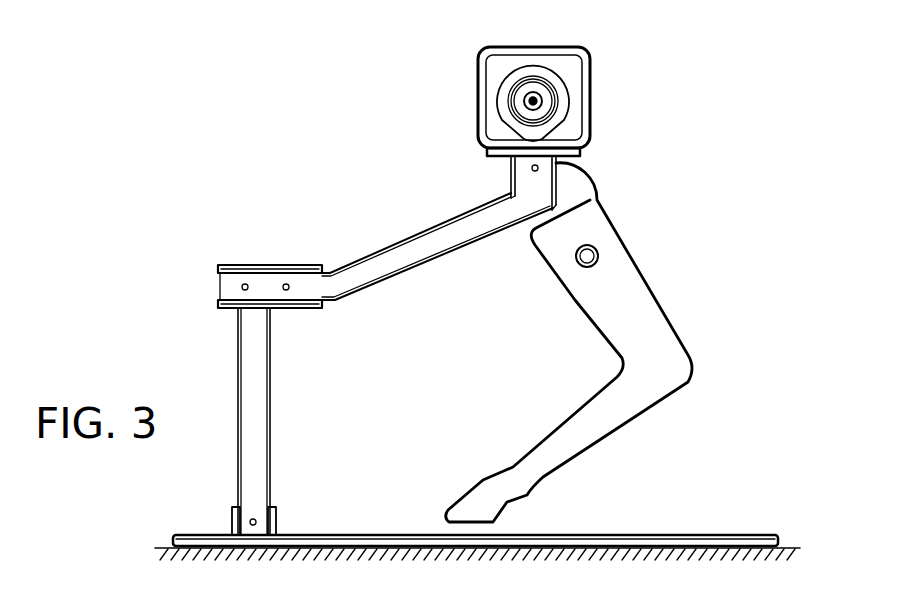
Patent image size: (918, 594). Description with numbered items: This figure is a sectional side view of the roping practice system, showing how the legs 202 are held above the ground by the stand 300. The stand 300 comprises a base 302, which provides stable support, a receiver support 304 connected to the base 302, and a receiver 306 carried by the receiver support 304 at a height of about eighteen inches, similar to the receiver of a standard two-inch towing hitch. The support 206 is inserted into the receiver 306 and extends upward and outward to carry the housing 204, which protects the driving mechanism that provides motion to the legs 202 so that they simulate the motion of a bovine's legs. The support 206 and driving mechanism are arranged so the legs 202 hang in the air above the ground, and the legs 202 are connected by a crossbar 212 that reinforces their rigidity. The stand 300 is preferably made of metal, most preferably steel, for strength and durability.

The stand 300 is at (238, 358).
The base 302 is at (724, 535).
The receiver support 304 is at (238, 467).
The receiver 306 is at (283, 262).
The support 206 is at (426, 226).
The housing 204 is at (594, 86).
The legs 202 is at (672, 320).
The crossbar 212 is at (598, 252).